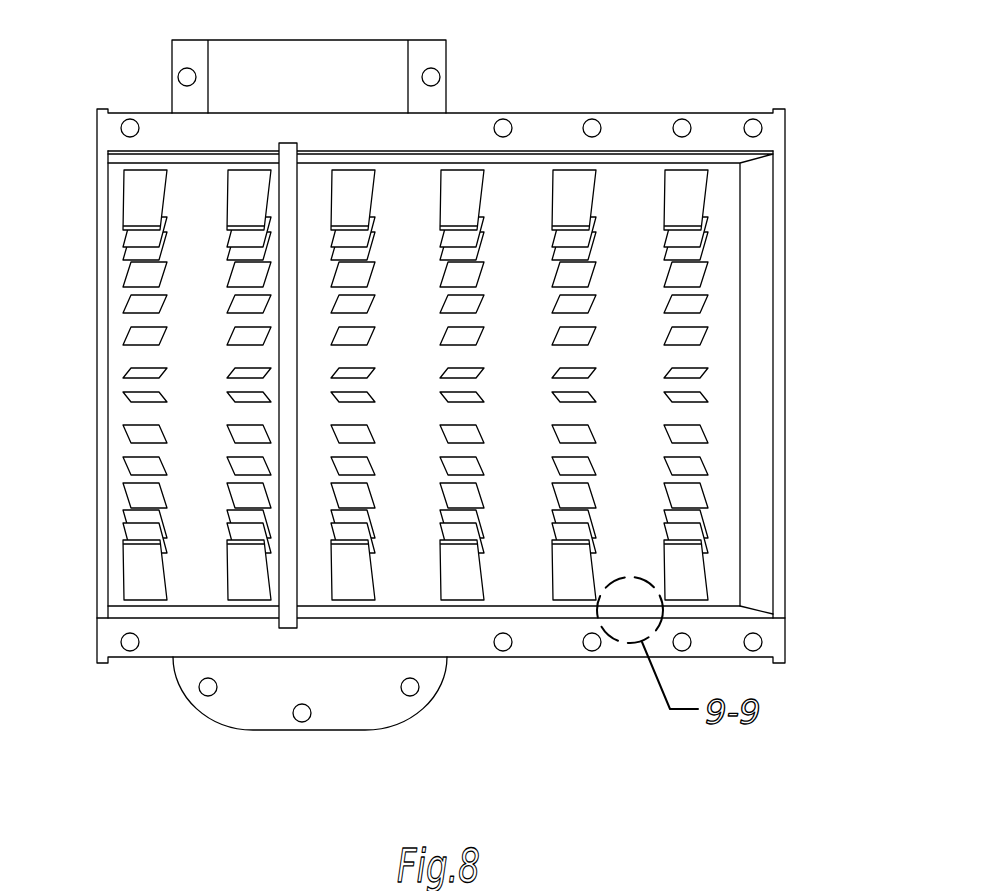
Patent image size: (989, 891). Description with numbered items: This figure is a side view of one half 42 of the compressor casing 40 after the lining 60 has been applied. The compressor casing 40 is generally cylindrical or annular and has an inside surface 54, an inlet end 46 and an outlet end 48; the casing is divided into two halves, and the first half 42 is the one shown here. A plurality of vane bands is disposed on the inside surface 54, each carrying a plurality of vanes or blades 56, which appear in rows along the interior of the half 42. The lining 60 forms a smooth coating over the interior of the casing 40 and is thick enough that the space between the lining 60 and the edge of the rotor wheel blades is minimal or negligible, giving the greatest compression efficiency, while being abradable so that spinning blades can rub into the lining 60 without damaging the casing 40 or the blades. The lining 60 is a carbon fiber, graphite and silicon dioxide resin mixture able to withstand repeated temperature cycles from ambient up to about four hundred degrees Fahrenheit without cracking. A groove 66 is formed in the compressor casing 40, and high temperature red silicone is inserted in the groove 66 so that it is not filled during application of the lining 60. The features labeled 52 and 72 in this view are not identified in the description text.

The compressor casing 40 is at (692, 58).
The first half 42 is at (720, 113).
The inlet end 46 is at (786, 130).
The outlet end 48 is at (97, 130).
The housing inner wall 52 is at (723, 425).
The inside surface 54 is at (148, 620).
The vanes 56 is at (138, 210).
The lining 60 is at (115, 612).
The groove 66 is at (290, 628).
The mounting holes 72 is at (682, 127).